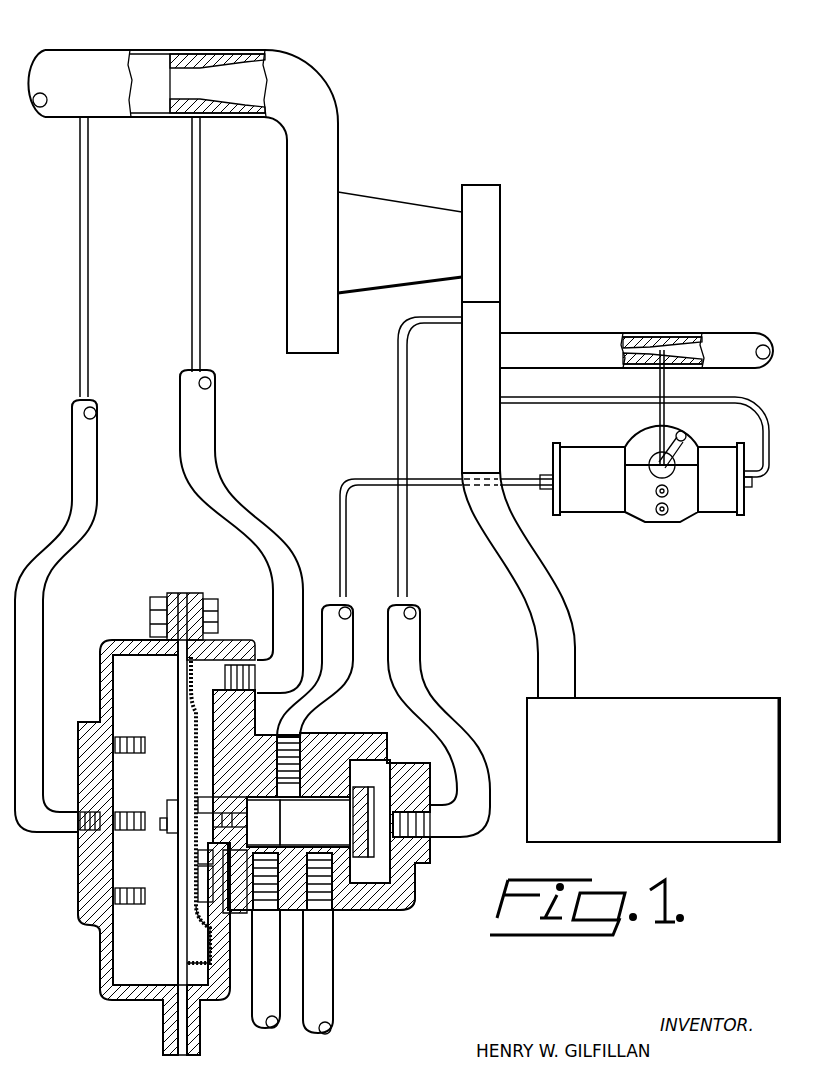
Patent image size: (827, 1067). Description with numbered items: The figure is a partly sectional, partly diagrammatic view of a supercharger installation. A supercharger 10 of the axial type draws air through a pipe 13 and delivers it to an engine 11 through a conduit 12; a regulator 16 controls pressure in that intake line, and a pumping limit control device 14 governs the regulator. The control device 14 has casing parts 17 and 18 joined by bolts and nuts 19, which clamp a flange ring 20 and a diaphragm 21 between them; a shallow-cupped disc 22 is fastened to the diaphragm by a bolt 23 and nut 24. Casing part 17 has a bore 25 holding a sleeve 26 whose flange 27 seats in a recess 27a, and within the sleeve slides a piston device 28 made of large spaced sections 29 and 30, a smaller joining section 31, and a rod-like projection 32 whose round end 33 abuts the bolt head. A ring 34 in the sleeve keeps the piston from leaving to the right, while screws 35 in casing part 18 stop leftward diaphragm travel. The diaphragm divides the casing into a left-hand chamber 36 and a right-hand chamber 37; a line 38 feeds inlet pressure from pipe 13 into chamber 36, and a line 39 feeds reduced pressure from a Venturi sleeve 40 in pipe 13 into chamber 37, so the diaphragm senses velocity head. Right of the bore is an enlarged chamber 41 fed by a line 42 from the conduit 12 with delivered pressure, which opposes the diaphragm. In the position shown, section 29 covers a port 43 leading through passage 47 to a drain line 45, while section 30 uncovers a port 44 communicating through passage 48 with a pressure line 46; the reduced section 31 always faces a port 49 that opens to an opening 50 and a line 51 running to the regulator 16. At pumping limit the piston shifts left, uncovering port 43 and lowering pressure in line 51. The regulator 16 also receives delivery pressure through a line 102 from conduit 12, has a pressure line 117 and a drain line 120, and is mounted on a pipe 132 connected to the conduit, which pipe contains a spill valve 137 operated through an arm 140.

The supercharger 10 is at (365, 220).
The engine 11 is at (656, 718).
The conduit 12 is at (546, 608).
The pipe 13 is at (100, 65).
The pumping limit control device 14 is at (108, 633).
The regulator 16 is at (616, 438).
The casing part 17 is at (370, 742).
The casing part 18 is at (172, 593).
The bolts and nuts 19 is at (206, 599).
The flange ring 20 is at (208, 668).
The diaphragm 21 is at (189, 735).
The shallow-cupped disc 22 is at (203, 912).
The bolt 23 is at (190, 833).
The nut 24 is at (172, 818).
The bore 25 is at (370, 823).
The sleeve 26 is at (360, 795).
The flange 27 is at (220, 778).
The lower plate 27a is at (200, 892).
The piston device 28 is at (428, 792).
The piston section 29 is at (246, 908).
The piston section 30 is at (432, 853).
The reduced section 31 is at (285, 812).
The rod-like projection 32 is at (222, 878).
The round end 33 is at (198, 857).
The ring 34 is at (362, 812).
The screws 35 is at (125, 812).
The left-hand chamber 36 is at (120, 968).
The right-hand chamber 37 is at (204, 1000).
The line 38 is at (93, 430).
The line 39 is at (205, 400).
The sleeve of reduced Venturi section 40 is at (206, 120).
The enlarged chamber 41 is at (410, 880).
The line 42 is at (412, 635).
The port 43 is at (246, 822).
The port 44 is at (320, 830).
The drain line 45 is at (266, 1020).
The pressure line 46 is at (320, 978).
The passage 47 is at (288, 928).
The passage 48 is at (330, 910).
The port 49 is at (290, 776).
The opening 50 is at (256, 743).
The line 51 is at (510, 482).
The line 102 is at (632, 403).
The pressure line 117 is at (658, 497).
The drain line 120 is at (669, 513).
The pipe 132 is at (604, 345).
The spill valve 137 is at (662, 350).
The arm 140 is at (688, 442).